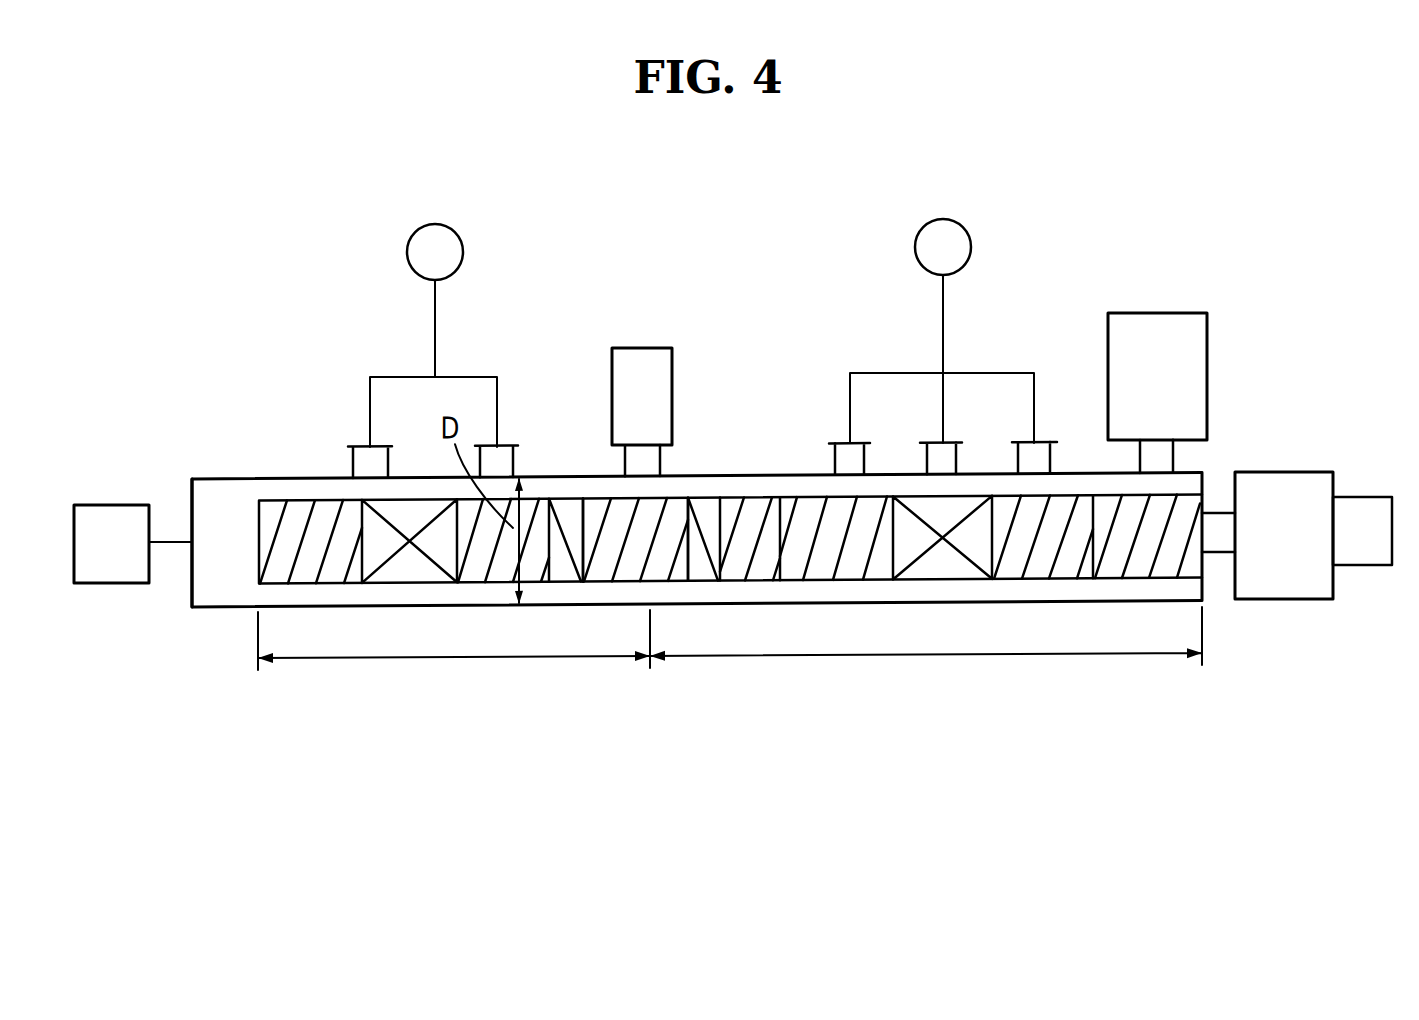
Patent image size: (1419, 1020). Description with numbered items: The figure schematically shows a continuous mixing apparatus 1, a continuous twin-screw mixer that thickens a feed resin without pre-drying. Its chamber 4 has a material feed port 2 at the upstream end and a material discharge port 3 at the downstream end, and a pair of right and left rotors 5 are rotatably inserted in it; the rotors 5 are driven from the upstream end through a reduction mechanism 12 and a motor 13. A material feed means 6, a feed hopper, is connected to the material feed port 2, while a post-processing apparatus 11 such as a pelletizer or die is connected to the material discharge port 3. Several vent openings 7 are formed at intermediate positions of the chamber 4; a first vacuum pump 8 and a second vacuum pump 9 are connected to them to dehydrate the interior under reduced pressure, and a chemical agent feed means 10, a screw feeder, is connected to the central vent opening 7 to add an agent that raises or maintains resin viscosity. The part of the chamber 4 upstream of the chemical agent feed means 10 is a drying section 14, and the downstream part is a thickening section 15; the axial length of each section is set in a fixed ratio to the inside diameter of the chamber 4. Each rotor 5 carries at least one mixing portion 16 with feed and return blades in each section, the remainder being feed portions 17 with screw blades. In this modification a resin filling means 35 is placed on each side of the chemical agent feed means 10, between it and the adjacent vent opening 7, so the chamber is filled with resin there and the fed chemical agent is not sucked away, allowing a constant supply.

The continuous mixing apparatus 1 is at (1072, 248).
The material feed port 2 is at (1163, 469).
The material discharge port 3 is at (194, 516).
The chamber 4 is at (803, 480).
The rotor 5 is at (550, 496).
The material feed means 6 is at (1170, 389).
The vent opening 7 is at (365, 476).
The first vacuum pump 8 is at (954, 264).
The second vacuum pump 9 is at (446, 269).
The chemical agent feed means 10 is at (656, 416).
The post-processing apparatus 11 is at (98, 561).
The reduction mechanism 12 is at (1298, 549).
The motor 13 is at (1368, 508).
The drying section 14 is at (972, 659).
The thickening section 15 is at (470, 659).
The mixing portion 16 is at (403, 574).
The feed portion 17 is at (597, 574).
The resin filling means 35 is at (570, 516).